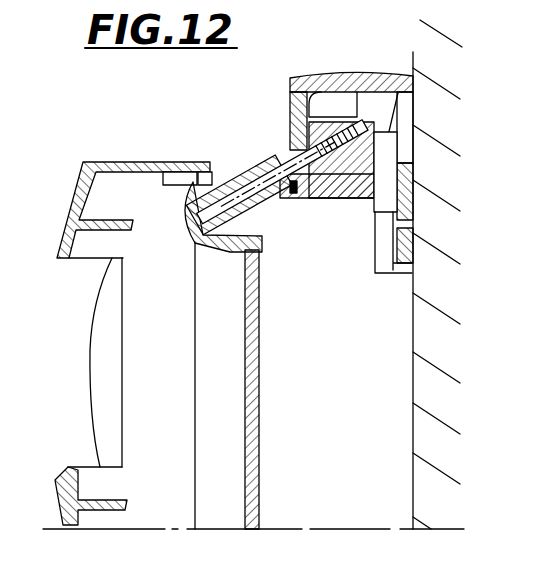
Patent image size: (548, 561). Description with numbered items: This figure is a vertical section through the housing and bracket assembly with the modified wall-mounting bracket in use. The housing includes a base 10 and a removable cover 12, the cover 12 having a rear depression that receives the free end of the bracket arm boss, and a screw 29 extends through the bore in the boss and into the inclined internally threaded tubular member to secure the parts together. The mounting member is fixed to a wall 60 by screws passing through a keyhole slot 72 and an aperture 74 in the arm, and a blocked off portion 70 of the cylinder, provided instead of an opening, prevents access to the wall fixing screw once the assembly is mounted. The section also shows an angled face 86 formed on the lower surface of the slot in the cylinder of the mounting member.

The base 10 is at (245, 375).
The removable cover 12 is at (119, 161).
The screw 29 is at (193, 230).
The wall 60 is at (437, 347).
The blocked off portion 70 is at (343, 139).
The keyhole slot 72 is at (407, 132).
The aperture 74 is at (403, 235).
The angled face 86 is at (298, 194).